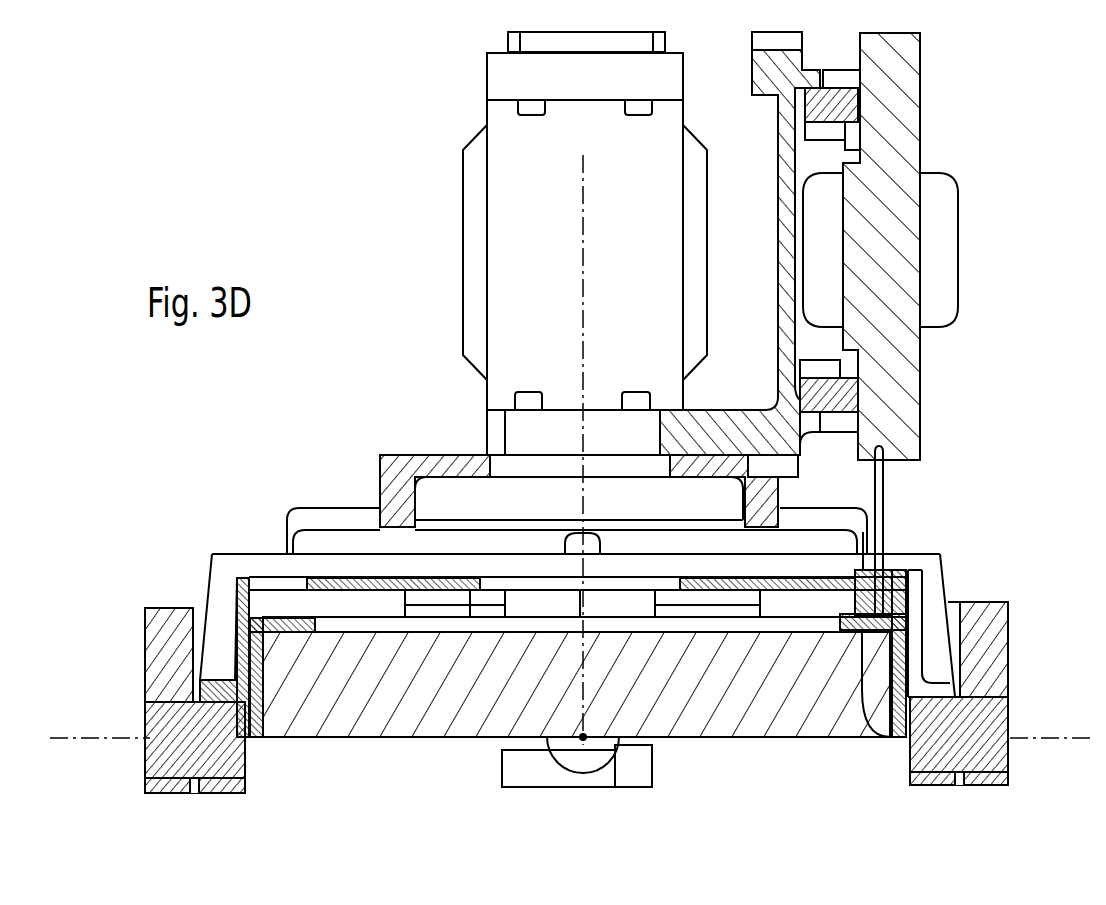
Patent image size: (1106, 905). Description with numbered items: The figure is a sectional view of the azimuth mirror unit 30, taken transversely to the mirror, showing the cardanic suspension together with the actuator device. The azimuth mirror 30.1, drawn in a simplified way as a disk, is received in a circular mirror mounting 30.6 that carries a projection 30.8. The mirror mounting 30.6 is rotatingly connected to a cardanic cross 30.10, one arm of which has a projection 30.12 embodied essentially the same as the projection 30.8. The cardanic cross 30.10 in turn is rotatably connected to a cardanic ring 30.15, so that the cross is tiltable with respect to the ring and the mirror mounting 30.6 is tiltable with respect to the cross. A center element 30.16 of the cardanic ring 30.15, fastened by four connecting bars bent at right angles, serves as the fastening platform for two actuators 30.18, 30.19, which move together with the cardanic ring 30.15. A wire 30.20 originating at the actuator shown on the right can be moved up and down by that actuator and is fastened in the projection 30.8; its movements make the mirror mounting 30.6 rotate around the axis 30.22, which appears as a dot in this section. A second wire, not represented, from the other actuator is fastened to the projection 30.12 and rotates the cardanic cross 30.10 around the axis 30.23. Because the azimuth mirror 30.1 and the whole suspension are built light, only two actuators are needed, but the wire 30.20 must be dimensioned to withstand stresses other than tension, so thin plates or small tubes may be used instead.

The azimuth mirror unit 30 is at (897, 560).
The azimuth mirror 30.1 is at (392, 700).
The mirror mounting 30.6 is at (258, 738).
The projection 30.8 is at (862, 668).
The cardanic cross 30.10 is at (727, 592).
The projection 30.12 is at (567, 550).
The cardanic ring 30.15 is at (170, 610).
The center element 30.16 is at (405, 458).
The actuator 30.18 is at (905, 148).
The actuator 30.19 is at (497, 190).
The wire 30.20 is at (888, 520).
The axis 30.22 is at (583, 745).
The axis 30.23 is at (77, 738).